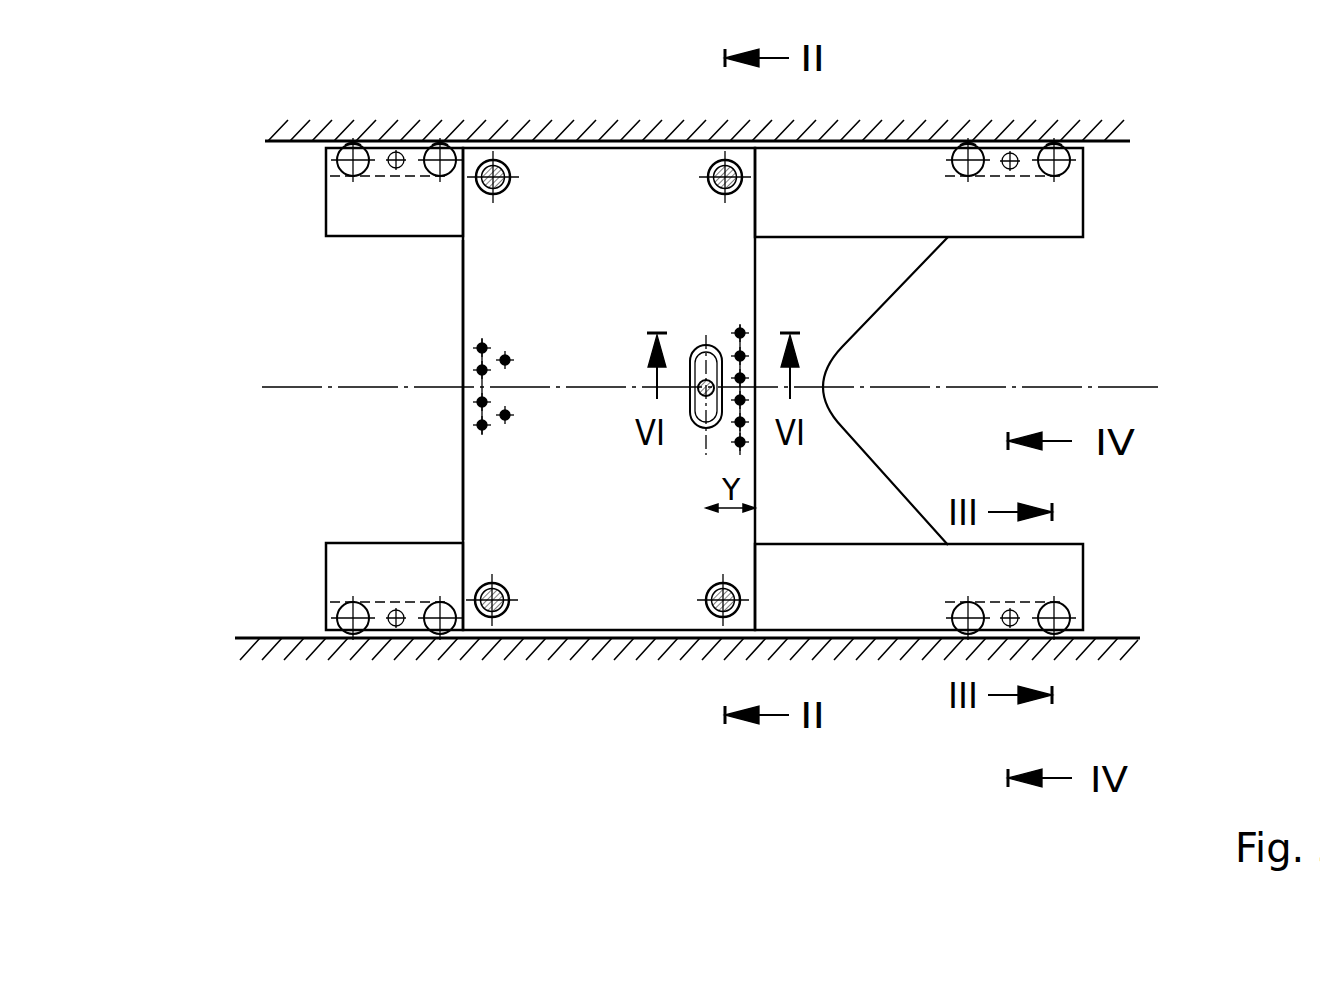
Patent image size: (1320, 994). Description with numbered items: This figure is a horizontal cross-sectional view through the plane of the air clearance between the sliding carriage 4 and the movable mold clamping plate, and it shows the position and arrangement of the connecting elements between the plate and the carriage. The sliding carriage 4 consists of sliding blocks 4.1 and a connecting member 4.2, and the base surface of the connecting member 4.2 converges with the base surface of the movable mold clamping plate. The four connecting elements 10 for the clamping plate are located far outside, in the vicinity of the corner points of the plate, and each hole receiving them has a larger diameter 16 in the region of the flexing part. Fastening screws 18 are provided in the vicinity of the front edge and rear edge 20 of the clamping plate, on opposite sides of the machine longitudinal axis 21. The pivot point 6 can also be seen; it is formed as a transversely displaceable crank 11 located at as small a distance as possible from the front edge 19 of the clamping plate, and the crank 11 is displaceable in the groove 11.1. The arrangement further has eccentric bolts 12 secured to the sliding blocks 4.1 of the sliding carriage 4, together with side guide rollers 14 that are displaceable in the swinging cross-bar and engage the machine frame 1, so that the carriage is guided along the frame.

The machine frame 1 is at (1127, 138).
The sliding carriage 4 is at (713, 416).
The sliding blocks 4.1 is at (812, 416).
The connecting member 4.2 is at (590, 200).
The pivot point 6 is at (688, 412).
The connecting elements 10 is at (490, 612).
The crank 11 is at (698, 404).
The groove 11.1 is at (705, 394).
The eccentric bolts 12 is at (1006, 151).
The side guide rollers 14 is at (1057, 144).
The larger diameter 16 is at (722, 612).
The fastening screws 18 is at (735, 333).
The front edge 19 is at (757, 265).
The front edge and rear edge 20 is at (463, 330).
The machine longitudinal axis 21 is at (300, 387).